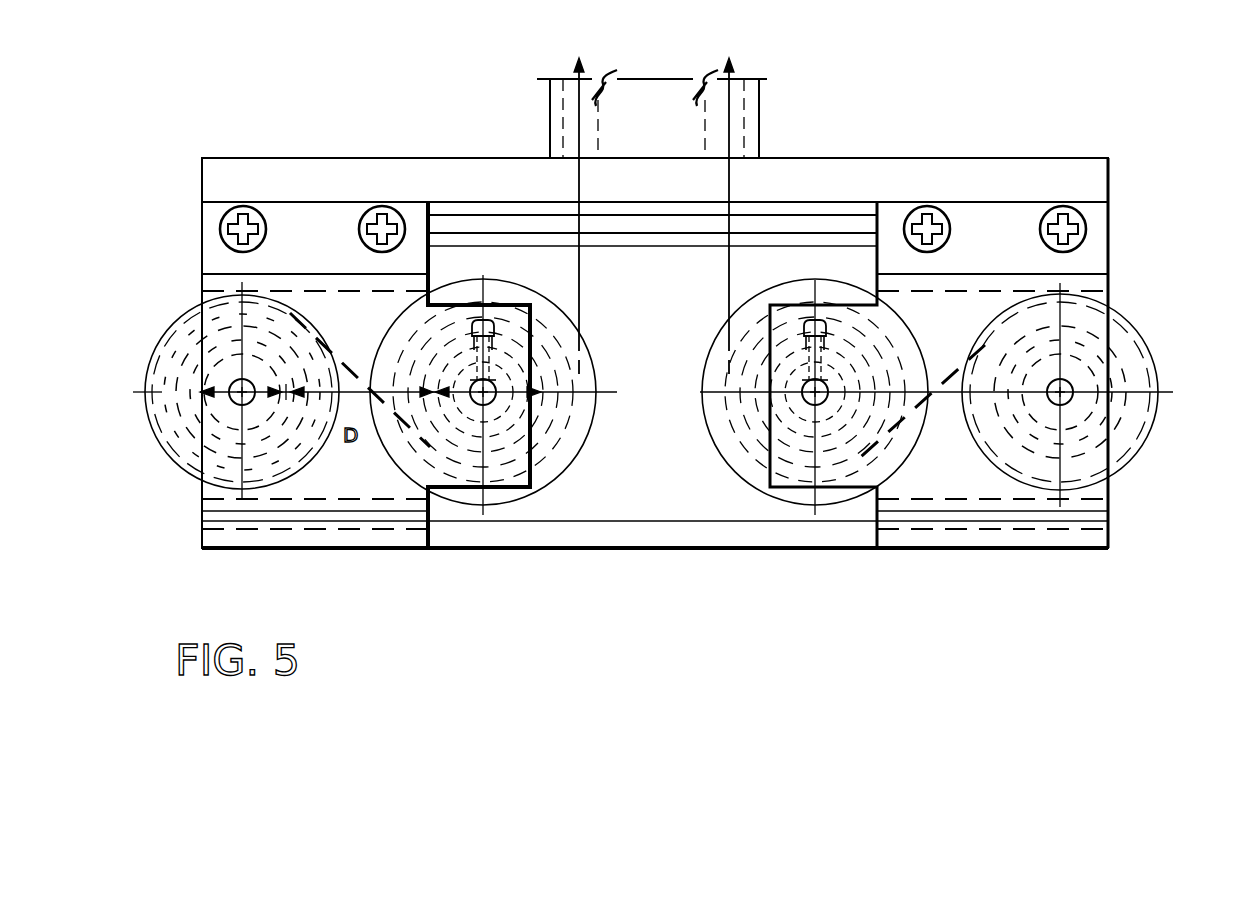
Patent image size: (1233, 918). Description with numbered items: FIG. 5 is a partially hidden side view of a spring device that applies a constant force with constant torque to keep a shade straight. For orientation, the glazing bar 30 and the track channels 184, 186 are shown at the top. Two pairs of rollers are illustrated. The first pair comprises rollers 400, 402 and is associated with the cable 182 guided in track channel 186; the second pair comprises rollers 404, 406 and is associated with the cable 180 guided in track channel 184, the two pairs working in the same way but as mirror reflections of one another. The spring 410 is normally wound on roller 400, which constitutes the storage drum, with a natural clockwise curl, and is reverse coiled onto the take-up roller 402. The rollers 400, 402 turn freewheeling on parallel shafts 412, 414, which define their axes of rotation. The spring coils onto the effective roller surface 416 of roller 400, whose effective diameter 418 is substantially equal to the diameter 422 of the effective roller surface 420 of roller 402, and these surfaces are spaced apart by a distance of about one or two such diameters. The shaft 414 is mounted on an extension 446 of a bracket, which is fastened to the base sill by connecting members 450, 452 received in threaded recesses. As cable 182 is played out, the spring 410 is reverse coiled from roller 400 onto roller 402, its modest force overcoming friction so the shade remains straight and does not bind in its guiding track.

The glazing bar 30 is at (658, 83).
The cable 180 is at (730, 267).
The cable 182 is at (580, 267).
The track channel 184 is at (760, 143).
The track channel 186 is at (550, 143).
The roller 400 is at (217, 453).
The roller 402 is at (583, 425).
The roller 404 is at (900, 462).
The roller 406 is at (1127, 427).
The spring 410 is at (347, 370).
The shaft 412 is at (235, 401).
The shaft 414 is at (495, 385).
The effective roller surface 416 is at (237, 358).
The effective diameter 418 is at (232, 354).
The effective roller surface 420 is at (490, 407).
The diameter 422 is at (481, 406).
The extension 446 is at (530, 490).
The connecting member 450 is at (258, 213).
The connecting member 452 is at (398, 213).